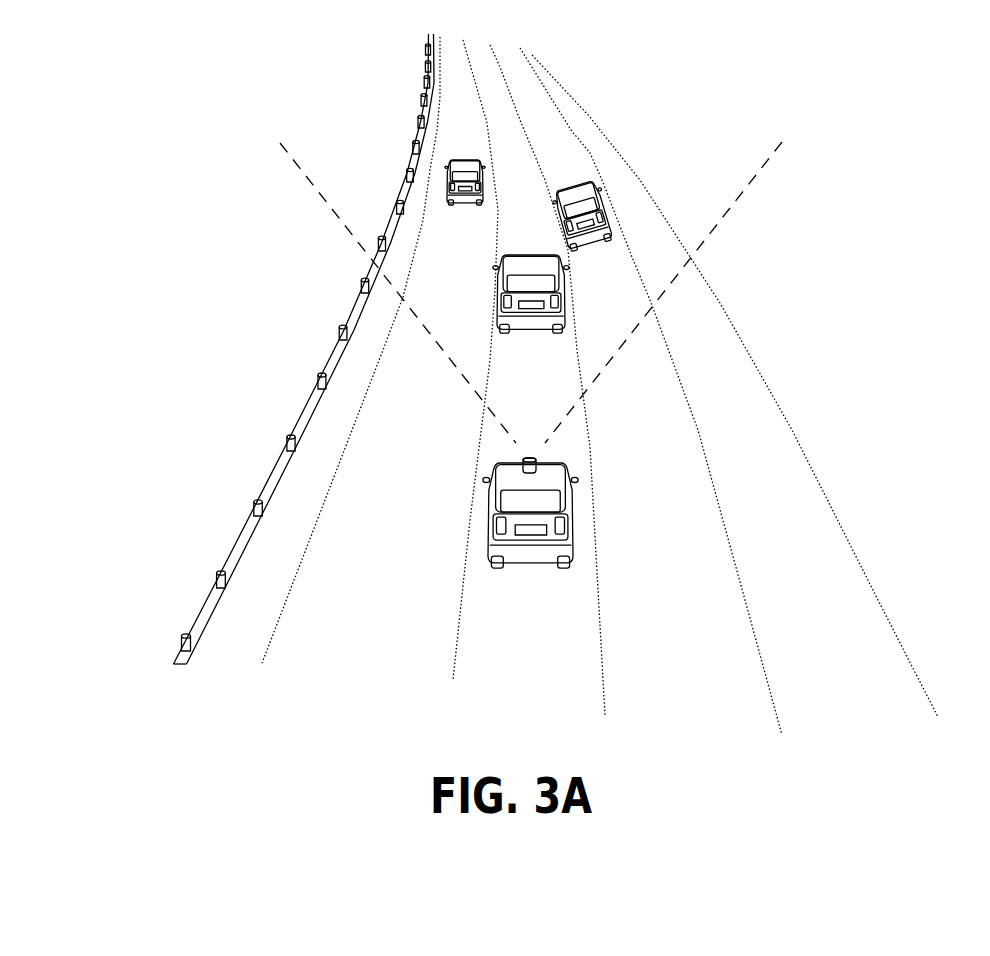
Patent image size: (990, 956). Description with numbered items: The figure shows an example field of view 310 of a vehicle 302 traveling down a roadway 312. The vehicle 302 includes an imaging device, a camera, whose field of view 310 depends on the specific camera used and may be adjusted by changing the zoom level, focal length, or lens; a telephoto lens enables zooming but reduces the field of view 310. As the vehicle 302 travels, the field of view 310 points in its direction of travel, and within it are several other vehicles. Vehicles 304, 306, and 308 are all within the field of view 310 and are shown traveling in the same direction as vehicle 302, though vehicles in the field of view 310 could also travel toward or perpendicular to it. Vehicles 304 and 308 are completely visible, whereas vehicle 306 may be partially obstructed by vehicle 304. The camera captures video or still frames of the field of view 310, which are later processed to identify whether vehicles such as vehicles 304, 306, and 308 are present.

The vehicle 302 is at (488, 530).
The vehicle 304 is at (563, 316).
The vehicle 306 is at (612, 224).
The vehicle 308 is at (447, 185).
The field of view 310 is at (452, 362).
The roadway 312 is at (600, 386).